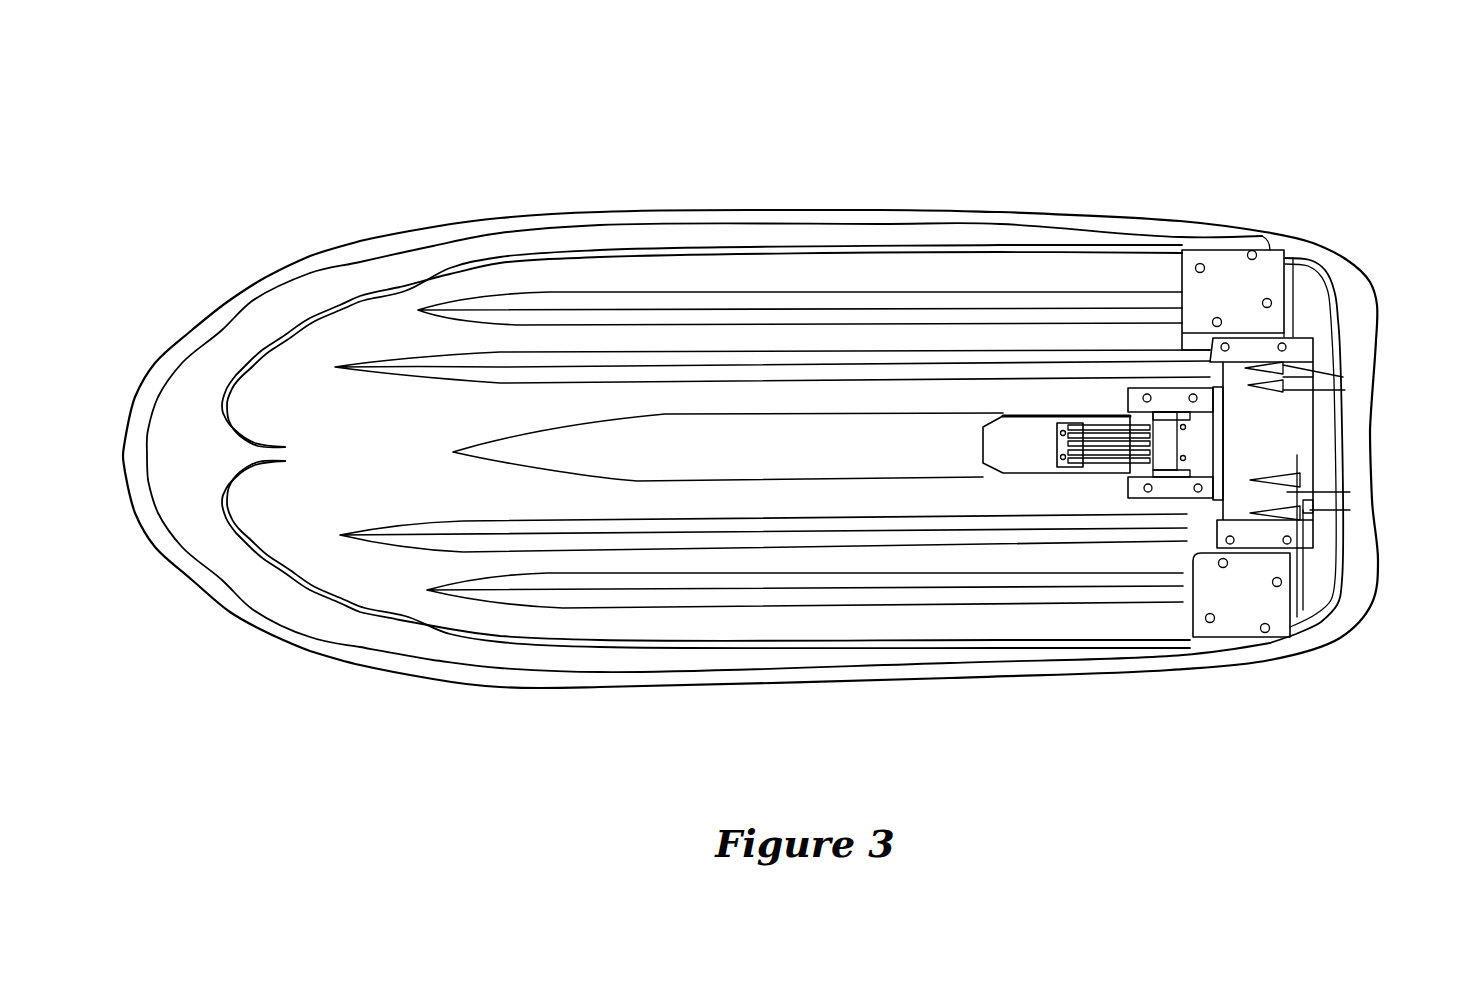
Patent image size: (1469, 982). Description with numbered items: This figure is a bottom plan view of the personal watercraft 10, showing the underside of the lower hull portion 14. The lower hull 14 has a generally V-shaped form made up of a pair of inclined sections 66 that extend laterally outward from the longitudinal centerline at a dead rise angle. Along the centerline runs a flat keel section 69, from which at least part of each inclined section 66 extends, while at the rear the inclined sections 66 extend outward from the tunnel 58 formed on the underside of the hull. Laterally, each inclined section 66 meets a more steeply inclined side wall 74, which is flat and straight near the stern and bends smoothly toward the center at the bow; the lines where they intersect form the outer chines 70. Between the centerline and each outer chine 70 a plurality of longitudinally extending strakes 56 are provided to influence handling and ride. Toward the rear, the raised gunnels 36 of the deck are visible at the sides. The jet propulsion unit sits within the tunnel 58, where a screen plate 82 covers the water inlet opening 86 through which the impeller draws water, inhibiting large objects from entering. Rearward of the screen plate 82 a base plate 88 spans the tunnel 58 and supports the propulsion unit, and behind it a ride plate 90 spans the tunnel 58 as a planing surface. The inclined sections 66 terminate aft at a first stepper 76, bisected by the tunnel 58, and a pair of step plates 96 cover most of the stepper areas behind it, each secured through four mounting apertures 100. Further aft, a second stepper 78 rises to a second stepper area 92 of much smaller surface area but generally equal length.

The watercraft 10 is at (938, 210).
The lower hull portion 14 is at (392, 678).
The raised gunnels 36 is at (968, 683).
The strakes 56 is at (727, 297).
The tunnel 58 is at (997, 445).
The inclined sections 66 is at (632, 275).
The flat keel section 69 is at (703, 460).
The outer chines 70 is at (810, 250).
The side walls 74 is at (1042, 240).
The first stepper 76 is at (1183, 247).
The second stepper 78 is at (1287, 260).
The screen plate 82 is at (1057, 445).
The water inlet opening 86 is at (1117, 458).
The base plate 88 is at (1128, 397).
The ride plate 90 is at (1308, 458).
The second stepper area 92 is at (1323, 303).
The step plates 96 is at (1230, 260).
The mounting apertures 100 is at (1212, 320).